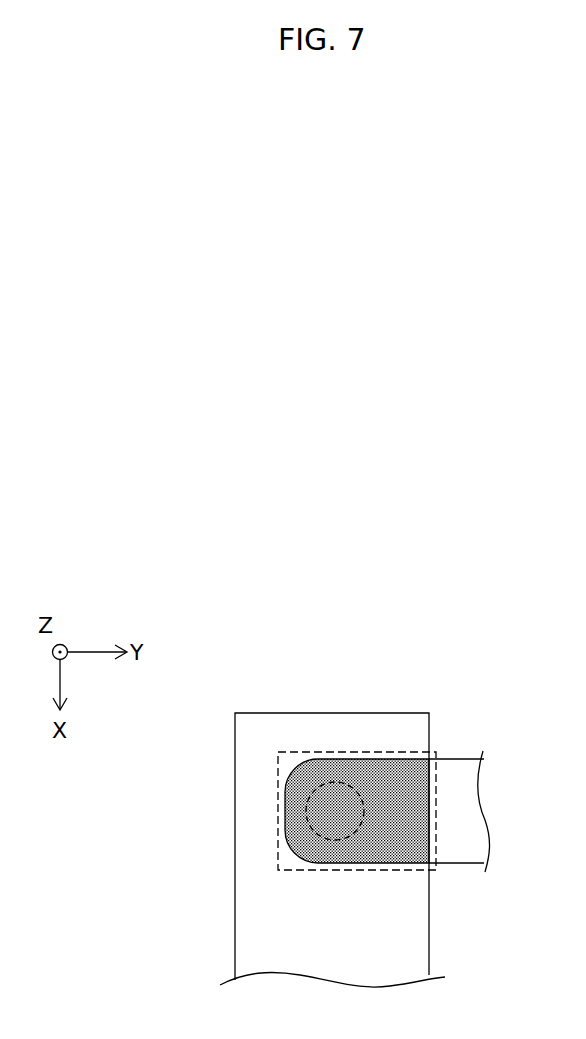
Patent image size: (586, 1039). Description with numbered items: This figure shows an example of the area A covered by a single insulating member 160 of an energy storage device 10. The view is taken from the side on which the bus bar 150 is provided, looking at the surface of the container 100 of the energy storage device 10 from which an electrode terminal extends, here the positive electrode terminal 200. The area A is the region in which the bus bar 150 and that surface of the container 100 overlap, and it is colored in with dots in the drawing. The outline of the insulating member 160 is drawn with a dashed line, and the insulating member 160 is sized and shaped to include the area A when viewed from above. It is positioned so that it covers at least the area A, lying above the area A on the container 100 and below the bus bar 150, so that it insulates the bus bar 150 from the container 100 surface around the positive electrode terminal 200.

The energy storage device 10 is at (424, 640).
The container 100 is at (235, 857).
The bus bar 150 is at (452, 758).
The insulating member 160 is at (293, 752).
The positive electrode terminal 200 is at (332, 782).
The area A is at (403, 850).